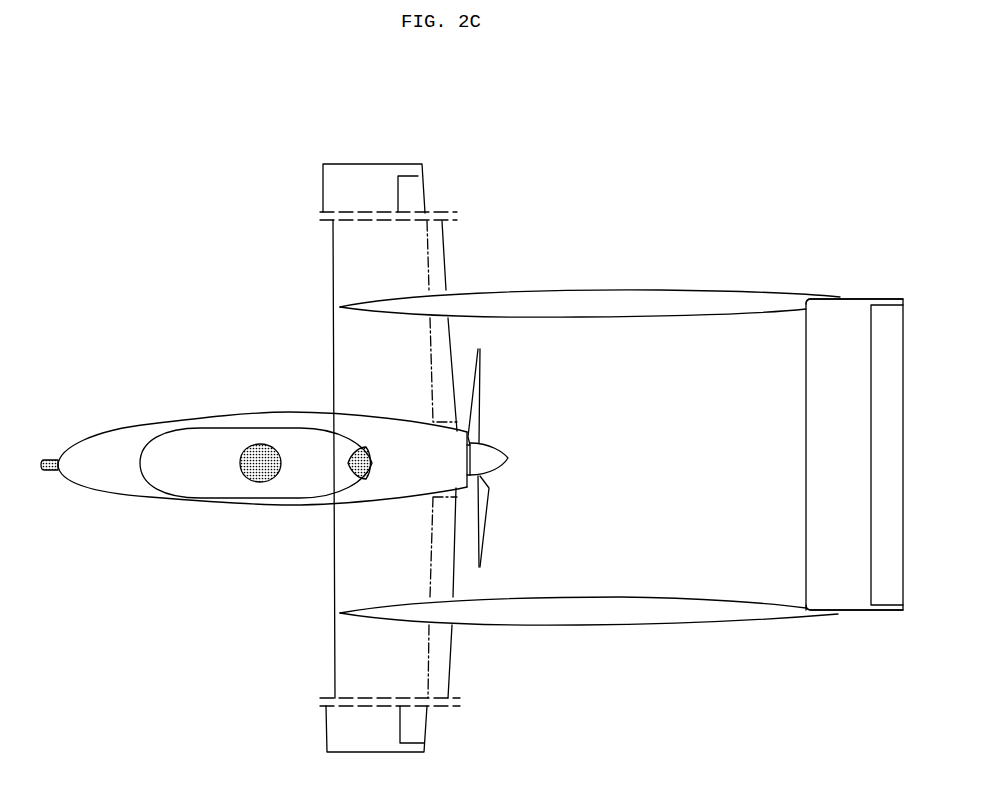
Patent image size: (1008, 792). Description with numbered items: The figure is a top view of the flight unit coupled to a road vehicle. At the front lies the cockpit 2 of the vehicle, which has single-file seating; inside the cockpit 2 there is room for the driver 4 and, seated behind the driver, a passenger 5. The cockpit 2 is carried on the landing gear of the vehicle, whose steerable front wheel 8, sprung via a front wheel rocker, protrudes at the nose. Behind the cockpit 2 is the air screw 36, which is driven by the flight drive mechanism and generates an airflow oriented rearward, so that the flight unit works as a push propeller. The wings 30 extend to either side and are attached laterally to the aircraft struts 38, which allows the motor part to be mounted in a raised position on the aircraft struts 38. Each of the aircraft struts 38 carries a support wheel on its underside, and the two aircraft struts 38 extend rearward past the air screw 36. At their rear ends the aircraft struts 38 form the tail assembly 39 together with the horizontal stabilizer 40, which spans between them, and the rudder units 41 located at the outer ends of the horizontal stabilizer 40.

The cockpit 2 is at (204, 427).
The driver 4 is at (262, 483).
The passenger 5 is at (365, 448).
The front wheel 8 is at (50, 460).
The wings 30 is at (334, 283).
The air screw 36 is at (480, 403).
The aircraft struts 38 is at (496, 300).
The tail assembly 39 is at (732, 485).
The horizontal stabilizer 40 is at (806, 556).
The rudder units 41 is at (832, 297).